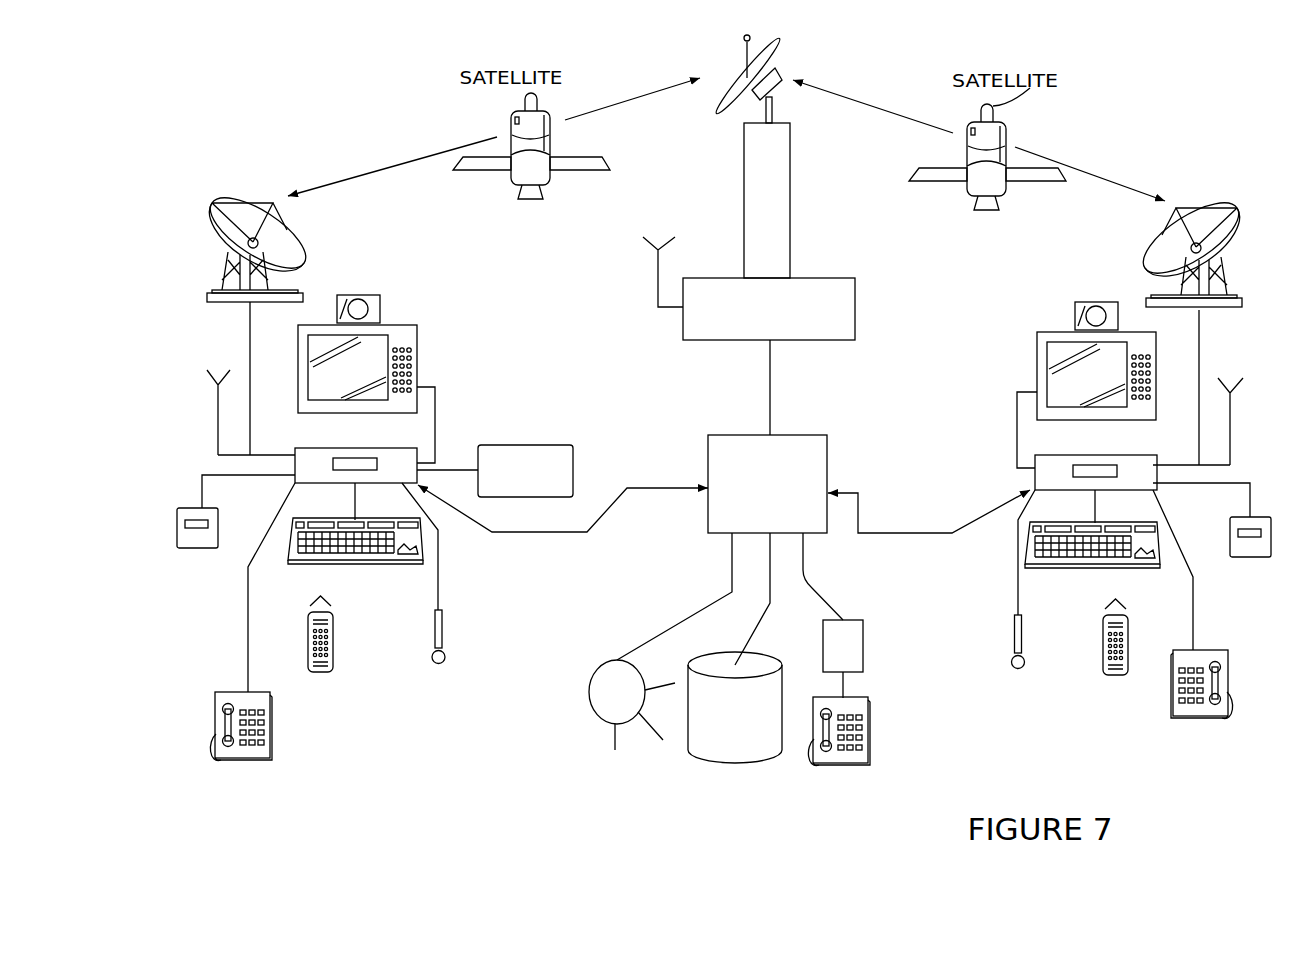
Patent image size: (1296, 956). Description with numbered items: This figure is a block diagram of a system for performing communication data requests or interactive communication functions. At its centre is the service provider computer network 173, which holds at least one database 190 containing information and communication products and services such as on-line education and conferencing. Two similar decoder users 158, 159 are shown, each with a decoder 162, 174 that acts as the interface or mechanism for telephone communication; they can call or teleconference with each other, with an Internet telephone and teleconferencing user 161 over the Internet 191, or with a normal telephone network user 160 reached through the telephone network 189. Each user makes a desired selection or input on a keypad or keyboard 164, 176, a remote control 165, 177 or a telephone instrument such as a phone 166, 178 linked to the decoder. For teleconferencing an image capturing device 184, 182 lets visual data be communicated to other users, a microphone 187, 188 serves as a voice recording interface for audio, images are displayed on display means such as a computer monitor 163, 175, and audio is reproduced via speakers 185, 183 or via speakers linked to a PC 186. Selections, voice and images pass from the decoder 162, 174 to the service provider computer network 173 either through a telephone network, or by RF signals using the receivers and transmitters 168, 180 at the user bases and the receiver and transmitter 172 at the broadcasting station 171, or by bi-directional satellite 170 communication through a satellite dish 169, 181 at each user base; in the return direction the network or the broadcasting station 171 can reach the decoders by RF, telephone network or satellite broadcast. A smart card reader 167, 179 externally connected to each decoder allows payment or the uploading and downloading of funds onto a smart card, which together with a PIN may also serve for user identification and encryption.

The decoder user 158 is at (256, 106).
The decoder user 159 is at (1194, 114).
The normal telephone network user 160 is at (849, 812).
The Internet telephone and teleconferencing user 161 is at (627, 810).
The decoder 162 is at (410, 448).
The computer monitor 163 is at (328, 380).
The keypad or keyboard 164 is at (365, 552).
The remote control 165 is at (334, 632).
The phone 166 is at (245, 760).
The smart card reader 167 is at (218, 528).
The receiver and transmitter 168 is at (212, 378).
The satellite dish 169 is at (228, 210).
The satellite 170 is at (540, 96).
The broadcasting station 171 is at (855, 312).
The receiver and transmitter 172 is at (668, 247).
The service provider computer network 173 is at (822, 465).
The decoder 174 is at (1043, 453).
The computer monitor 175 is at (1062, 380).
The keypad or keyboard 176 is at (1083, 573).
The remote control 177 is at (1105, 648).
The phone 178 is at (1195, 717).
The smart card reader 179 is at (1230, 538).
The receiver and transmitter 180 is at (1237, 378).
The satellite dish 181 is at (1220, 220).
The image capturing device 182 is at (1075, 312).
The speakers 183 is at (1152, 370).
The image capturing device 184 is at (380, 308).
The speakers 185 is at (410, 365).
The PC 186 is at (573, 477).
The microphone 187 is at (433, 662).
The microphone 188 is at (1023, 667).
The telephone network 189 is at (862, 712).
The database 190 is at (732, 748).
The Internet 191 is at (589, 680).